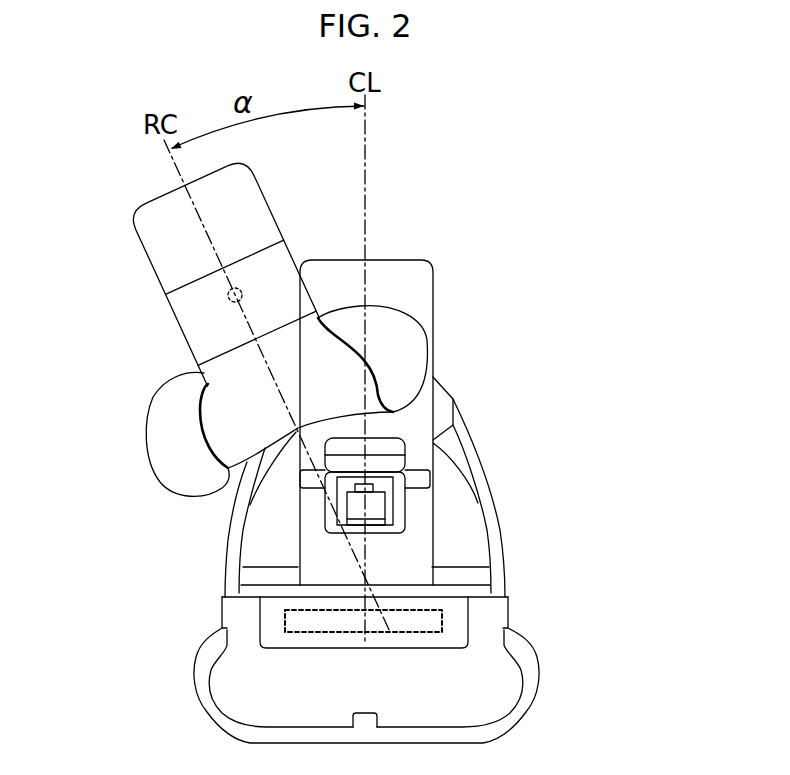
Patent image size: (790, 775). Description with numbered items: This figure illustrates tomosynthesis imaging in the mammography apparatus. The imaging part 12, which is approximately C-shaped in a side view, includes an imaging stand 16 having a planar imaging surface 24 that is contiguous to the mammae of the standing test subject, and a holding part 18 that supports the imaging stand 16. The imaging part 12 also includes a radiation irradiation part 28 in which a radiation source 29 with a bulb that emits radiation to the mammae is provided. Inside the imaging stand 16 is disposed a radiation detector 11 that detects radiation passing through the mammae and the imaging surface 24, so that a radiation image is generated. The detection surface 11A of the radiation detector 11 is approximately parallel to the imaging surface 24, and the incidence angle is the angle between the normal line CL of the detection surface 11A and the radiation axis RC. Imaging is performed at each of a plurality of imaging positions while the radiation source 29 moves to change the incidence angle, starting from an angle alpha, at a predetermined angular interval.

The radiation detector 11 is at (444, 617).
The detection surface 11A is at (297, 608).
The imaging part 12 is at (150, 218).
The imaging stand 16 is at (268, 620).
The holding part 18 is at (422, 293).
The imaging surface 24 is at (478, 590).
The radiation irradiation part 28 is at (207, 330).
The radiation source 29 is at (228, 298).